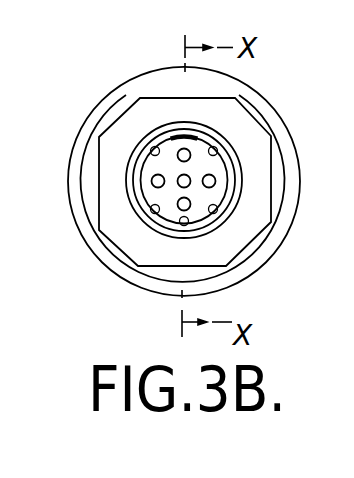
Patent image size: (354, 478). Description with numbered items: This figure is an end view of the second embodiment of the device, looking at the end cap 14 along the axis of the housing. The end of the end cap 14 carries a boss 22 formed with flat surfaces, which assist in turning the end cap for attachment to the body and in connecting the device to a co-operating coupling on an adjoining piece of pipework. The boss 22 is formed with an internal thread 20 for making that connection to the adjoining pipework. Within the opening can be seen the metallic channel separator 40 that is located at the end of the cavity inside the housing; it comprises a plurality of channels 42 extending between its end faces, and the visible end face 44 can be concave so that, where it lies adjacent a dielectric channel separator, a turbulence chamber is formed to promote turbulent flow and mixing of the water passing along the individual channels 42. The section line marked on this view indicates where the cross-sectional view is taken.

The end cap 14 is at (75, 213).
The internal thread 20 is at (200, 148).
The boss 22 is at (222, 252).
The metallic channel separator 40 is at (168, 144).
The channel 42 is at (153, 188).
The end face 44 is at (160, 164).